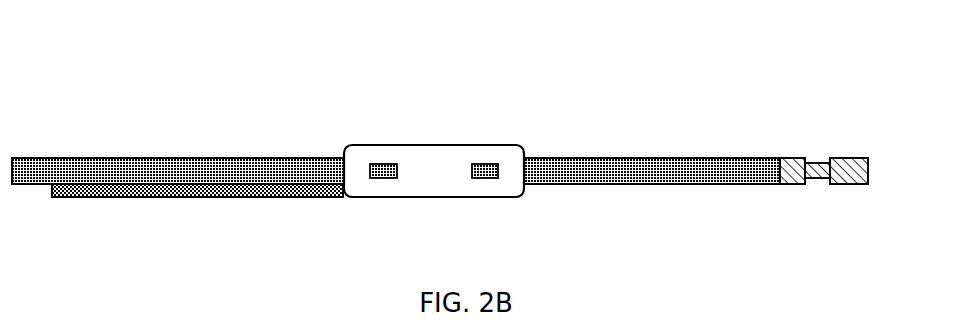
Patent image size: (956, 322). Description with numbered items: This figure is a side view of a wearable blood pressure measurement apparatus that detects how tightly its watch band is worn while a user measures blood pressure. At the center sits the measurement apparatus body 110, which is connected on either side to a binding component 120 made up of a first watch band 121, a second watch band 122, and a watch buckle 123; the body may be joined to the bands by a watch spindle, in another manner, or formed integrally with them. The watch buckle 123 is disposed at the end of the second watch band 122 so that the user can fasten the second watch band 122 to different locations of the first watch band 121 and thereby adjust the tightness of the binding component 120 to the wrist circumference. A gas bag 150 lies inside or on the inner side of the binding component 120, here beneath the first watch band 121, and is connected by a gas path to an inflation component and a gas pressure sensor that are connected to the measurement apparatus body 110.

The binding component 120 is at (908, 98).
The first watch band 121 is at (142, 158).
The second watch band 122 is at (640, 158).
The watch buckle 123 is at (856, 158).
The gas bag 150 is at (203, 198).
The measurement apparatus body 110 is at (433, 197).